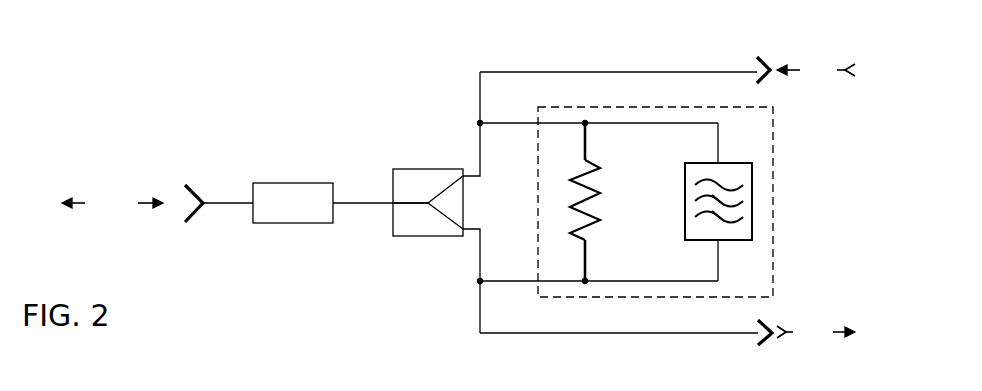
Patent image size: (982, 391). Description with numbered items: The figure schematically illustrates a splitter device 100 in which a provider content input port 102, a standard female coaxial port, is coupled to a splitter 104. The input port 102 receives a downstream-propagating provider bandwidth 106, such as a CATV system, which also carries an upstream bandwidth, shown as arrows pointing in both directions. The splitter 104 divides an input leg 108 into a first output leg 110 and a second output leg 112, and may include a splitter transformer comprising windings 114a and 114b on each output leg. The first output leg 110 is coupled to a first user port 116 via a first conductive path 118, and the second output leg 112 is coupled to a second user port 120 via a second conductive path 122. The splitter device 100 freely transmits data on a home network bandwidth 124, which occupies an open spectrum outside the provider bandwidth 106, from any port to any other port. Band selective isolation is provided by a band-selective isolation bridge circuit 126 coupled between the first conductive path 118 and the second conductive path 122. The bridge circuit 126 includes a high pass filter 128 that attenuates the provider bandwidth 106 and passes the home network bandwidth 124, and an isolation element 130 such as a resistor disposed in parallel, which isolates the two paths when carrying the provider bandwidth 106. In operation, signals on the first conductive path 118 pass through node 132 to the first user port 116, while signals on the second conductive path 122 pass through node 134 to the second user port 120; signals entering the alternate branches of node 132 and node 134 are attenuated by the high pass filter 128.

The splitter device 100 is at (450, 58).
The provider content input port 102 is at (237, 205).
The splitter 104 is at (392, 183).
The provider bandwidth 106 is at (97, 213).
The input leg 108 is at (410, 203).
The first output leg 110 is at (478, 152).
The second output leg 112 is at (478, 255).
The winding 114a is at (443, 187).
The winding 114b is at (440, 213).
The first user port 116 is at (713, 70).
The first conductive path 118 is at (548, 72).
The second user port 120 is at (725, 333).
The second conductive path 122 is at (578, 333).
The home network bandwidth 124 is at (803, 80).
The band-selective isolation bridge circuit 126 is at (773, 157).
The high pass filter 128 is at (753, 210).
The isolation element 130 is at (585, 158).
The node 132 is at (480, 123).
The node 134 is at (478, 282).